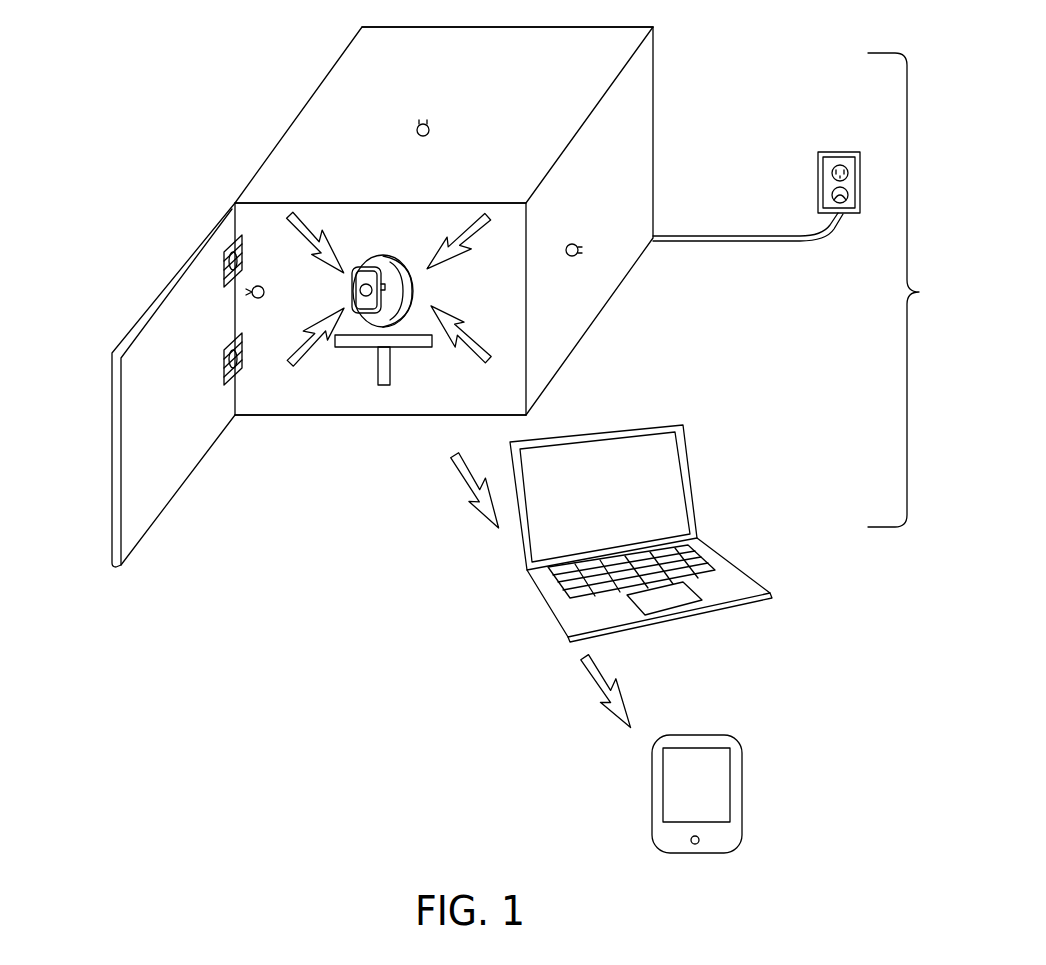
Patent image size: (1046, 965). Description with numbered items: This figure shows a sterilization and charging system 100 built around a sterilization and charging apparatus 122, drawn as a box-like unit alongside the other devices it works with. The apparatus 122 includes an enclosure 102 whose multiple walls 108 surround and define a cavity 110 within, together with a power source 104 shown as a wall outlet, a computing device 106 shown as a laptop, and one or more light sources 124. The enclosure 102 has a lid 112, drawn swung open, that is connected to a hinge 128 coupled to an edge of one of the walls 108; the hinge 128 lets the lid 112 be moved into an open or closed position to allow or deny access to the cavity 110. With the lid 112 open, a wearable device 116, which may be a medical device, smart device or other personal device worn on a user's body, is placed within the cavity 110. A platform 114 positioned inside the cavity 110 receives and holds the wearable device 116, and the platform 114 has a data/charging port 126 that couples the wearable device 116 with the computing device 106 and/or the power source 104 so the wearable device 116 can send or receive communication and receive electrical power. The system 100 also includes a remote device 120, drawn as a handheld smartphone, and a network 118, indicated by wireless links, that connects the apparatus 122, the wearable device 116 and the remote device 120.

The sterilization and charging system 100 is at (148, 79).
The enclosure 102 is at (636, 56).
The power source 104 is at (838, 152).
The computing device 106 is at (722, 556).
The walls 108 is at (287, 150).
The cavity 110 is at (283, 402).
The lid 112 is at (110, 478).
The platform 114 is at (383, 387).
The wearable device 116 is at (412, 293).
The network 118 is at (462, 485).
The remote device 120 is at (652, 785).
The sterilization and charging apparatus 122 is at (914, 290).
The light sources 124 is at (432, 128).
The data/charging port 126 is at (405, 345).
The hinge 128 is at (241, 255).